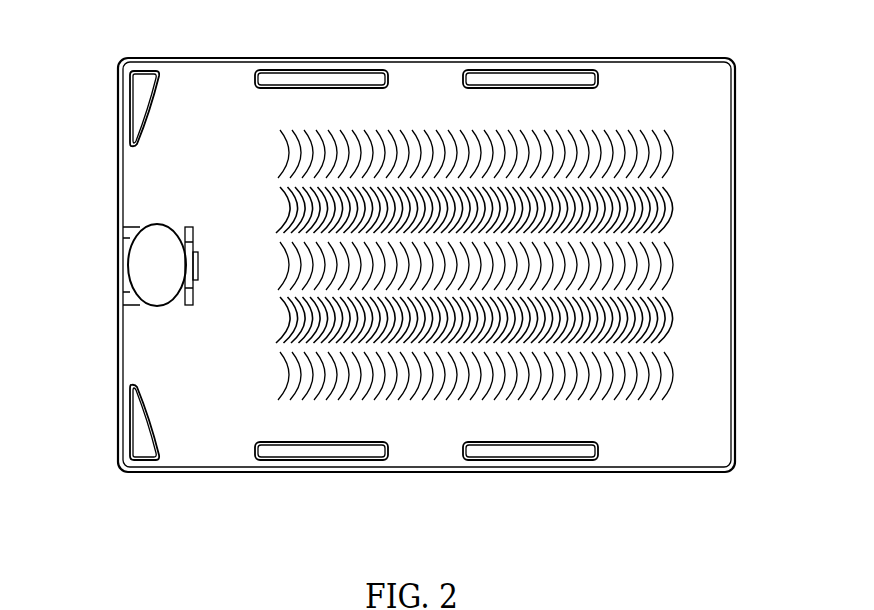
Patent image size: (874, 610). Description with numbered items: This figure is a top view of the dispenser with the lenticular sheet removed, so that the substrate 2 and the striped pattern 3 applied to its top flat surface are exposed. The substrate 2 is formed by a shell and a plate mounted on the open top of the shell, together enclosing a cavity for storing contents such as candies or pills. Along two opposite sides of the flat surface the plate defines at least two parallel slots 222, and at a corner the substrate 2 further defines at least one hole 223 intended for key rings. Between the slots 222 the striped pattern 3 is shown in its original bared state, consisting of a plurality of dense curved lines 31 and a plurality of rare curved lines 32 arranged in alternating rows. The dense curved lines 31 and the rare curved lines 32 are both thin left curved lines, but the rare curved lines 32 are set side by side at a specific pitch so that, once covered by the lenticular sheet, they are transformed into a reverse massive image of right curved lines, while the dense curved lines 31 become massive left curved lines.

The substrate 2 is at (716, 75).
The parallel slots 222 is at (309, 80).
The hole 223 is at (140, 100).
The striped pattern 3 is at (561, 265).
The dense curved lines 31 is at (667, 200).
The rare curved lines 32 is at (665, 270).